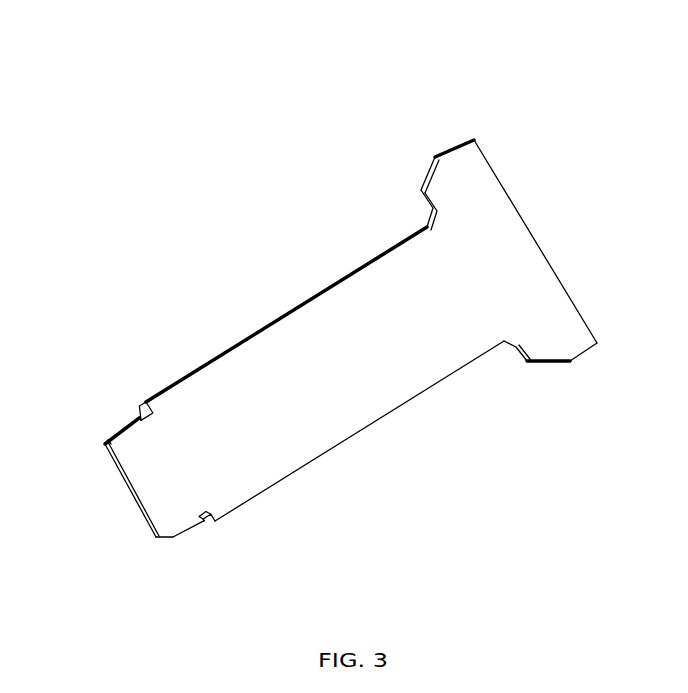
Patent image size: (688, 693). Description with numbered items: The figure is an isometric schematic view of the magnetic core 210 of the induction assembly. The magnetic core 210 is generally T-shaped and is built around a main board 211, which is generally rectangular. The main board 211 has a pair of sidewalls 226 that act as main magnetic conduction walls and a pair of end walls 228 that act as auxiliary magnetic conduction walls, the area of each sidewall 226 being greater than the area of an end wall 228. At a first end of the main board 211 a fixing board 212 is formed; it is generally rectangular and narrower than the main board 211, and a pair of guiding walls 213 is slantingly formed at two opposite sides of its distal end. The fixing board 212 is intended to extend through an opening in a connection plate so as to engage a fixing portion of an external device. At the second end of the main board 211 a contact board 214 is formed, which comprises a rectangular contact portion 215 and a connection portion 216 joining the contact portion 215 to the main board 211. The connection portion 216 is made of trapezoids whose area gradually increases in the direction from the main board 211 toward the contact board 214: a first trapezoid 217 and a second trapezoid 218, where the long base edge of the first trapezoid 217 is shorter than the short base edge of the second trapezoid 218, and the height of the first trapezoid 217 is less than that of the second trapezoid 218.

The magnetic core 210 is at (346, 43).
The main board 211 is at (257, 373).
The fixing board 212 is at (145, 478).
The guiding walls 213 is at (106, 437).
The contact board 214 is at (520, 245).
The contact portion 215 is at (468, 158).
The connection portion 216 is at (367, 193).
The first trapezoid 217 is at (432, 211).
The second trapezoid 218 is at (437, 177).
The sidewalls 226 is at (370, 408).
The end walls 228 is at (181, 380).